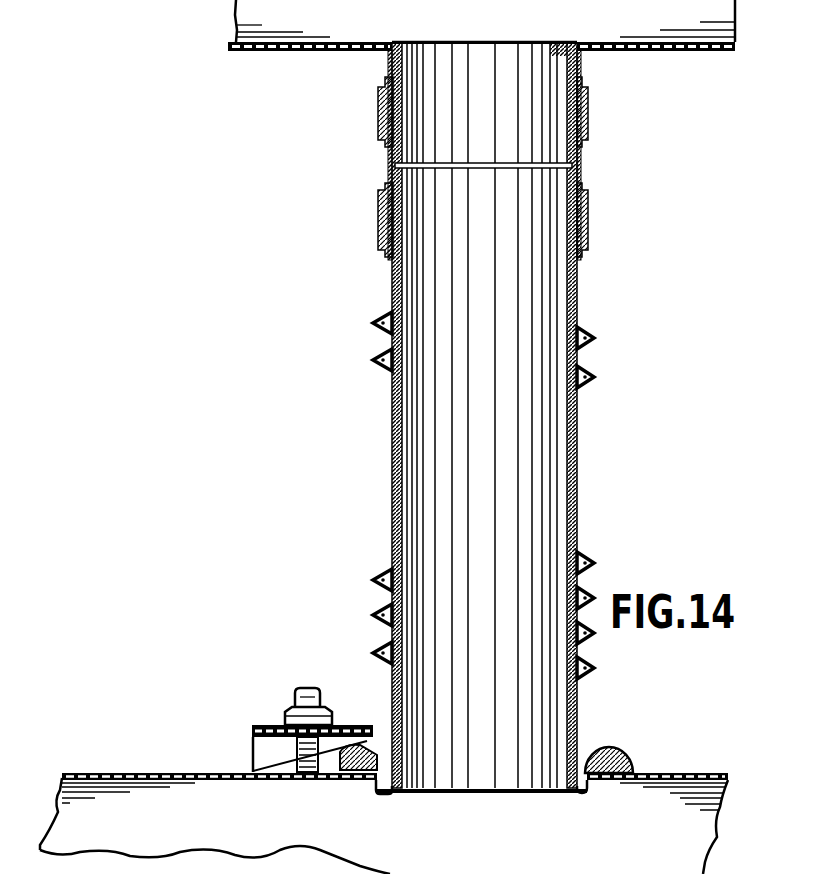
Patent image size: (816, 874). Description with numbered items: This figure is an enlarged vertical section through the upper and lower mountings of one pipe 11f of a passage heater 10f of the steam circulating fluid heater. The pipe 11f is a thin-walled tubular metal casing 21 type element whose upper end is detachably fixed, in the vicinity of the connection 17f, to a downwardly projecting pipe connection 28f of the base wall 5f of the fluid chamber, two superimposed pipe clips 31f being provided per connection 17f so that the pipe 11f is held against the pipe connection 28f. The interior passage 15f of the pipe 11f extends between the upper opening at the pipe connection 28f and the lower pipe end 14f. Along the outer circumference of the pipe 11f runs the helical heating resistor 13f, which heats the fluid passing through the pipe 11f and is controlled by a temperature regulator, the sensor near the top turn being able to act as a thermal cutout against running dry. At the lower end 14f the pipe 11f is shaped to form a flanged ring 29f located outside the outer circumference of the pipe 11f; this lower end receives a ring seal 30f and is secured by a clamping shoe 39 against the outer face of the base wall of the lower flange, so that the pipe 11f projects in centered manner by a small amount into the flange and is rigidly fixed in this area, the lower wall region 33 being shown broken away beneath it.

The base wall 5f is at (352, 43).
The tubular metal casing 21 is at (238, 17).
The pipe 11f is at (579, 455).
The pipe bore 15f is at (456, 58).
The pipe connection 28f is at (547, 48).
The connection 17f is at (617, 122).
The pipe clip 31f is at (590, 197).
The heating resistor 13f is at (375, 320).
The passage heater 10f is at (353, 477).
The pipe lower end 14f is at (473, 792).
The ring seal 30f is at (608, 780).
The flanged ring 29f is at (614, 745).
The clamping shoe 39 is at (262, 723).
The ground 33 is at (169, 868).